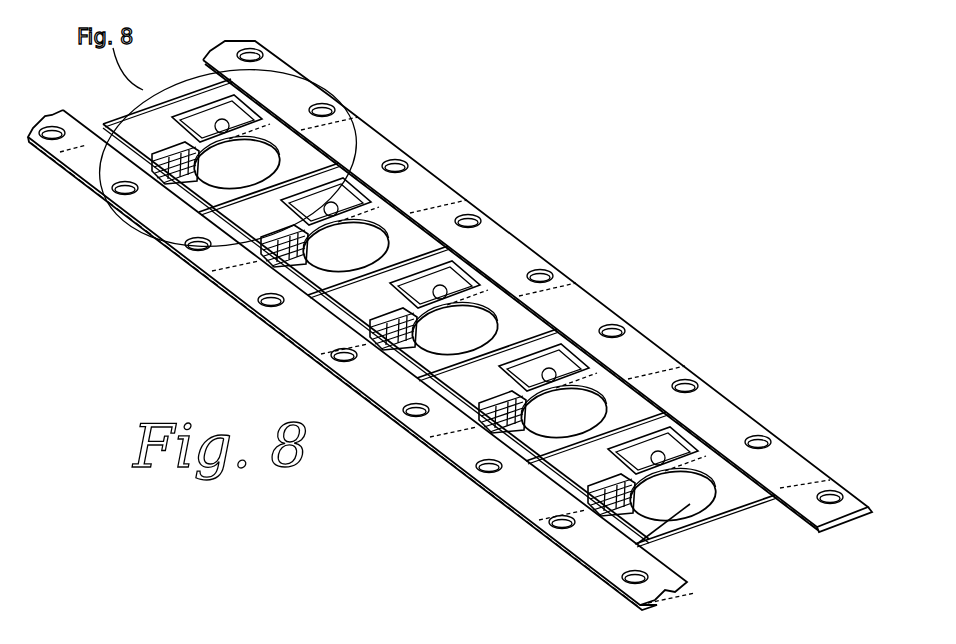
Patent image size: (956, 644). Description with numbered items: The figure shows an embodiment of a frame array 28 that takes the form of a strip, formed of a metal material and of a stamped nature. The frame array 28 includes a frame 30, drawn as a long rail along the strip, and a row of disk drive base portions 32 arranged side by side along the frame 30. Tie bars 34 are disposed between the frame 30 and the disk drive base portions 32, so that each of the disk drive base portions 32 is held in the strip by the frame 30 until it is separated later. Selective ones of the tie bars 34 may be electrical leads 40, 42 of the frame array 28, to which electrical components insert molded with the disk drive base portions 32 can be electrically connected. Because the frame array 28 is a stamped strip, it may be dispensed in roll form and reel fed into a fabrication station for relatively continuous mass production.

The frame array 28 is at (450, 325).
The frame 30 is at (237, 283).
The disk drive base portions 32 is at (449, 333).
The tie bars 34 is at (625, 554).
The electrical lead 40 is at (538, 495).
The electrical lead 42 is at (609, 515).